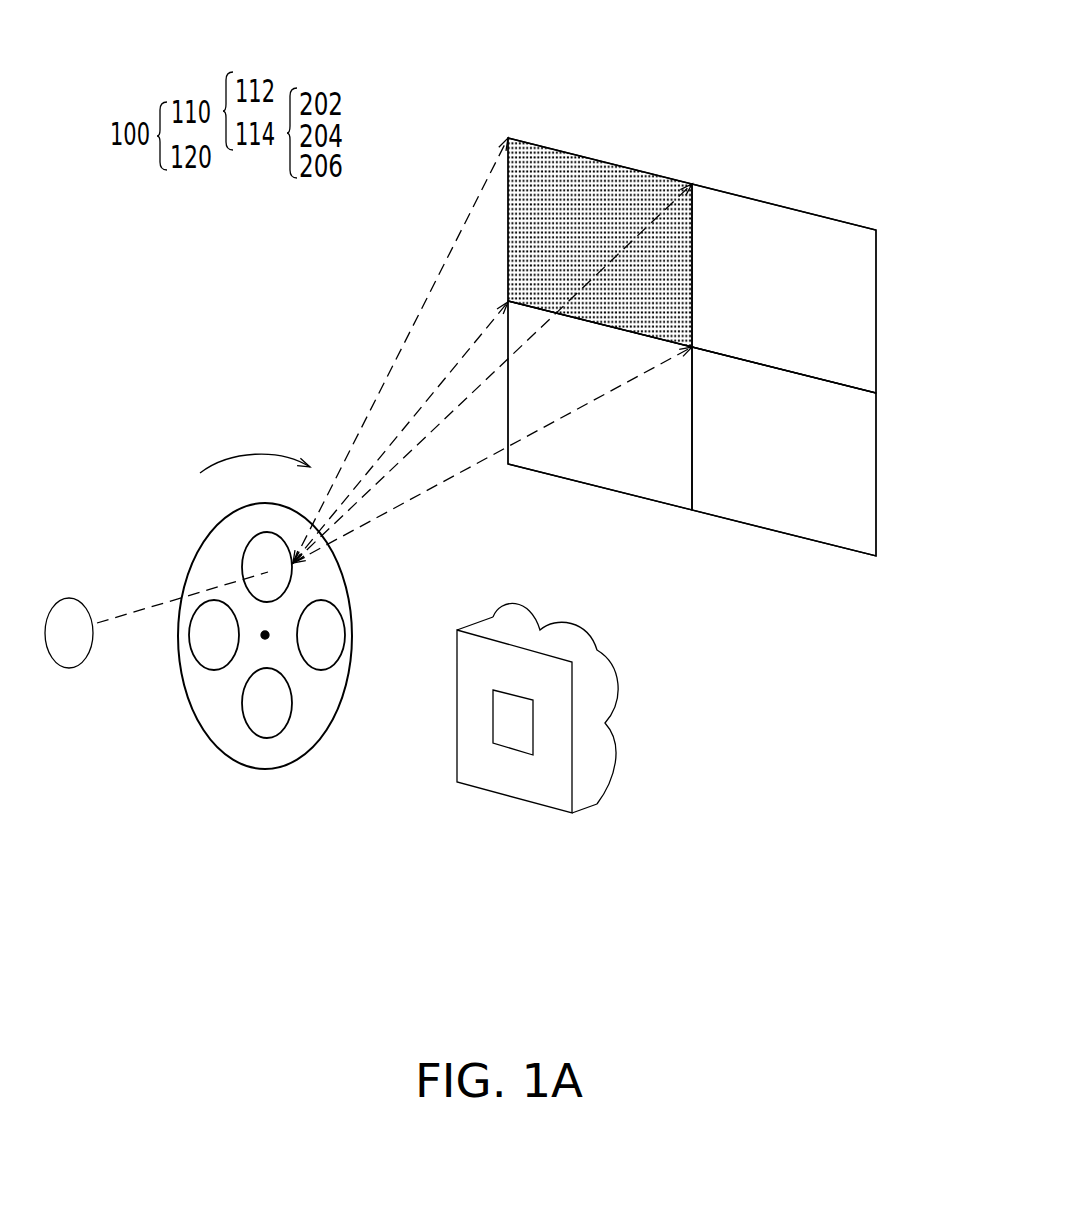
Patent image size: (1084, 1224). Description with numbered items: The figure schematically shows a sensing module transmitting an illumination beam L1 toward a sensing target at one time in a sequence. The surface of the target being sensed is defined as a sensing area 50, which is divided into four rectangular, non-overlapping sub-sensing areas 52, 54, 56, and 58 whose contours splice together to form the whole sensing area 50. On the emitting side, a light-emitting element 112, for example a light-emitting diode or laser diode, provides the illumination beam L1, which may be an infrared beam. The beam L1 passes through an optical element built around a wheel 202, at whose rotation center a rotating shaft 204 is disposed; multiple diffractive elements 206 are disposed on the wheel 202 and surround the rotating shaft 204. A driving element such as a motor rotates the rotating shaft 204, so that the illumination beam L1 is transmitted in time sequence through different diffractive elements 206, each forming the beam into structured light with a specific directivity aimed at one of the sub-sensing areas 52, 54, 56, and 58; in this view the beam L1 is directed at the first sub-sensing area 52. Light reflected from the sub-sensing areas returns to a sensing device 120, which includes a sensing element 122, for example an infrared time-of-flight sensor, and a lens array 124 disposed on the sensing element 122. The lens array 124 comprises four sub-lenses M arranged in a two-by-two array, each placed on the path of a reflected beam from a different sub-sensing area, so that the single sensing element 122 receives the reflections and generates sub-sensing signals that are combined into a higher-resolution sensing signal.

The sensing area 50 is at (478, 102).
The sub-sensing area 52 is at (527, 198).
The sub-sensing area 54 is at (862, 290).
The sub-sensing area 56 is at (862, 470).
The sub-sensing area 58 is at (652, 485).
The illumination beam L1 is at (442, 485).
The light-emitting element 112 is at (70, 657).
The sensing device 120 is at (566, 779).
The sensing element 122 is at (520, 743).
The lens array 124 is at (566, 755).
The wheel 202 is at (302, 642).
The rotating shaft 204 is at (267, 637).
The diffractive elements 206 is at (262, 725).
The sub-lenses M is at (597, 645).